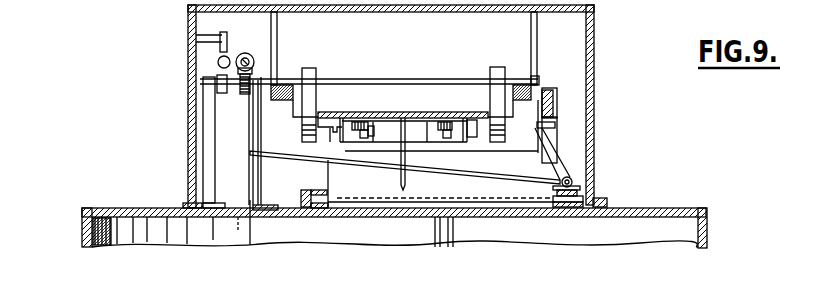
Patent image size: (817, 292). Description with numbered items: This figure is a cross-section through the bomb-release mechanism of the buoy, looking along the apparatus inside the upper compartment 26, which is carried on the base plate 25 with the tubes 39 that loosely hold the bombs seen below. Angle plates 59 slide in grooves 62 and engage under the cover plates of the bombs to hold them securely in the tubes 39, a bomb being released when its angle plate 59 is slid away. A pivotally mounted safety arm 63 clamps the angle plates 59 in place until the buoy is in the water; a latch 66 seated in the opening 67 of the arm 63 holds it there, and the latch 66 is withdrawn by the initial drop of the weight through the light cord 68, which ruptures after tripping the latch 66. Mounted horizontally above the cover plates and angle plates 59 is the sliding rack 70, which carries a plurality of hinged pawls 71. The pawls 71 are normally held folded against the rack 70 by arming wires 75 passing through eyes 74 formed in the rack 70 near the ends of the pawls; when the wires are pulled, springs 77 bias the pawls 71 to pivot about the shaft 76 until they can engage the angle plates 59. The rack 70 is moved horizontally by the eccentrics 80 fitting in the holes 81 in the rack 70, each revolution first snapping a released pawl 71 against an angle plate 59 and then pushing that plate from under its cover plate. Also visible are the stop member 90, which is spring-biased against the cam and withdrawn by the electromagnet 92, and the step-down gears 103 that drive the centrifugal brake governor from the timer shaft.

The base plate 25 is at (708, 240).
The upper compartment 26 is at (594, 128).
The tubes 39 is at (383, 250).
The angle plates 59 is at (328, 179).
The grooves 62 is at (303, 190).
The safety arm 63 is at (550, 90).
The latch 66 is at (297, 153).
The opening 67 is at (540, 124).
The light cord 68 is at (250, 223).
The sliding rack 70 is at (385, 112).
The hinged pawls 71 is at (337, 134).
The eyes 74 is at (406, 128).
The arming wires 75 is at (426, 126).
The shaft 76 is at (426, 130).
The springs 77 is at (361, 131).
The eccentrics 80 is at (322, 58).
The holes 81 is at (315, 111).
The stop member 90 is at (226, 38).
The electromagnet 92 is at (241, 56).
The step-down gears 103 is at (243, 90).